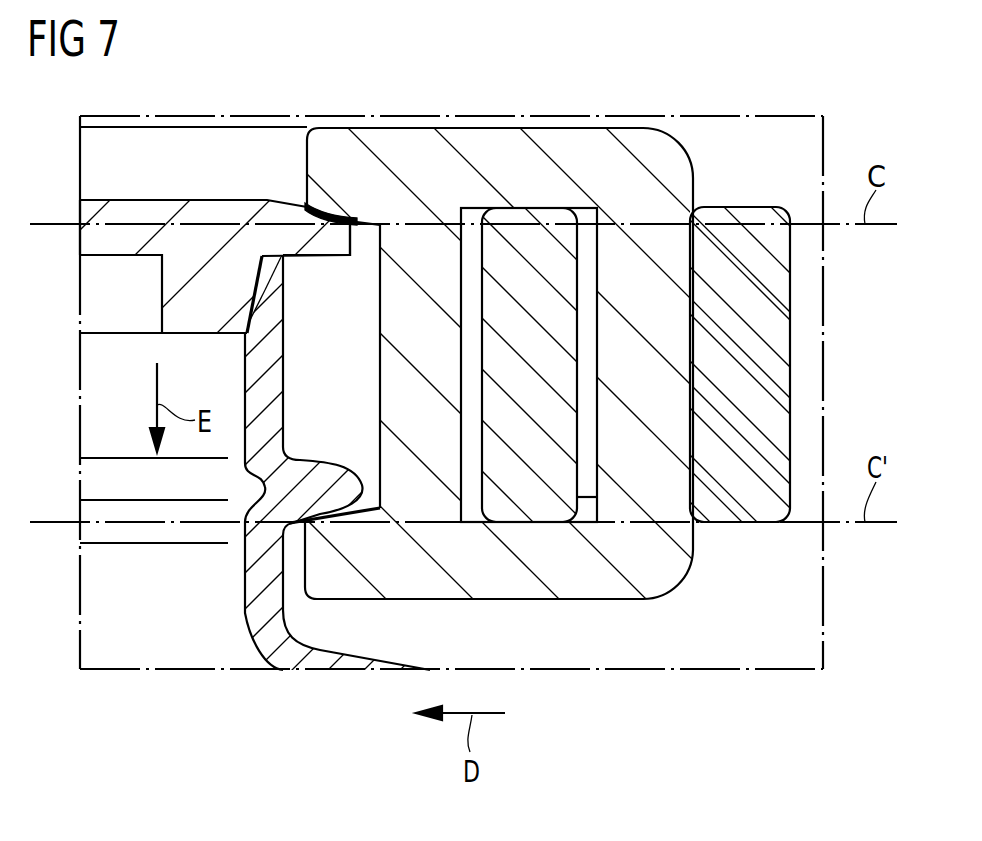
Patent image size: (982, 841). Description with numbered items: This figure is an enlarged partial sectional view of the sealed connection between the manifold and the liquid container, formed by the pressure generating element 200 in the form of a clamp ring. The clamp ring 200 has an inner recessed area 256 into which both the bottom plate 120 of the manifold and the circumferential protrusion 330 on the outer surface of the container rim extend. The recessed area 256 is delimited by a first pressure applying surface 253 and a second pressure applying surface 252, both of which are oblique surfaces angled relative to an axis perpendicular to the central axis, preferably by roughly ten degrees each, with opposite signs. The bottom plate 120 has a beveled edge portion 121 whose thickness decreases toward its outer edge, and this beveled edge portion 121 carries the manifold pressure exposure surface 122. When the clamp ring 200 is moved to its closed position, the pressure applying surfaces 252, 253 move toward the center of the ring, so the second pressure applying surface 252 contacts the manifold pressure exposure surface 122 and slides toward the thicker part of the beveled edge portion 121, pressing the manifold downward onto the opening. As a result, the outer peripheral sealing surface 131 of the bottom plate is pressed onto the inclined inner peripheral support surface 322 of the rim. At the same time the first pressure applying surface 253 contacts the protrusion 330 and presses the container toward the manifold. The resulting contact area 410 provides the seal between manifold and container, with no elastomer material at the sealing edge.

The bottom plate 120 is at (117, 210).
The beveled edge portion 121 is at (298, 238).
The manifold pressure exposure surface 122 is at (318, 206).
The outer peripheral sealing surface 131 is at (253, 282).
The pressure generating element 200 is at (387, 127).
The second pressure applying surface 252 is at (365, 224).
The first pressure applying surface 253 is at (353, 515).
The inner recessed area 256 is at (380, 353).
The inner peripheral support surface 322 is at (273, 280).
The circumferential protrusion 330 is at (327, 505).
The contact area 410 is at (249, 304).